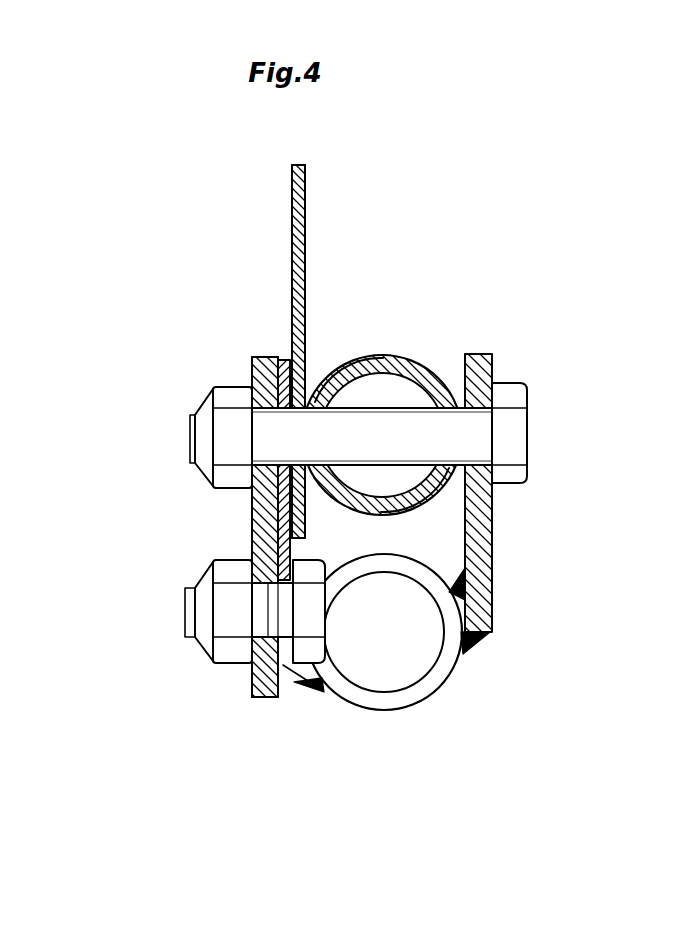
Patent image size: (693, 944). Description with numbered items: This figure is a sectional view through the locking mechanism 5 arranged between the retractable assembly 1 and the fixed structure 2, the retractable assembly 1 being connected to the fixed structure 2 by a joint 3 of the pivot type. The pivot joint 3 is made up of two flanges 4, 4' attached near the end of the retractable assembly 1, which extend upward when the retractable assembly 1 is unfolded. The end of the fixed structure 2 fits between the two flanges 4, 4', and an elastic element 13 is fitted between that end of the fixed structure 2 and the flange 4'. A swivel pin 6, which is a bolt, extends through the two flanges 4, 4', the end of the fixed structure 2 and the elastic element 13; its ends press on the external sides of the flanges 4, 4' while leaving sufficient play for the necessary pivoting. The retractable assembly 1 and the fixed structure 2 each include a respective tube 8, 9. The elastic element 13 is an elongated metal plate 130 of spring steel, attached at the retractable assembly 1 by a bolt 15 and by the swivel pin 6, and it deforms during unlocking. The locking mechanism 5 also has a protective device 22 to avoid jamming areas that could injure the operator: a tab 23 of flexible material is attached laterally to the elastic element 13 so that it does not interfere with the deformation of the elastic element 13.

The retractable assembly 1 is at (410, 712).
The fixed structure 2 is at (390, 355).
The joint 3 is at (528, 428).
The flange 4 is at (532, 506).
The flange 4' is at (271, 589).
The locking mechanism 5 is at (125, 488).
The swivel pin 6 is at (402, 430).
The tube 8 is at (437, 680).
The tube 9 is at (341, 383).
The elastic element 13 is at (283, 352).
The bolt 15 is at (230, 655).
The protective device 22 is at (290, 245).
The tab 23 is at (305, 182).
The elongated metal plate 130 is at (253, 357).